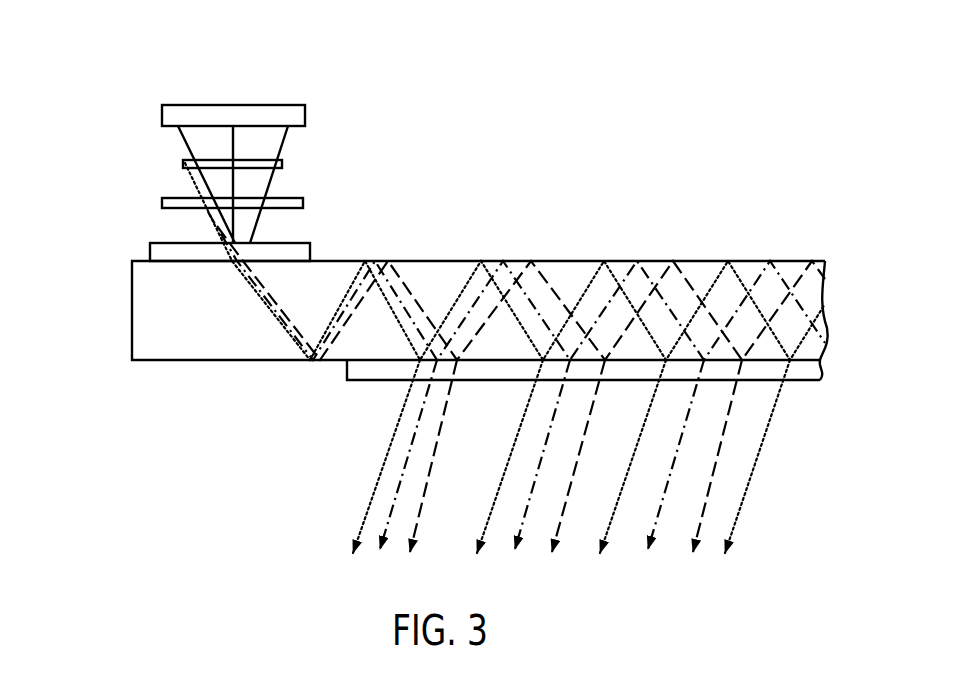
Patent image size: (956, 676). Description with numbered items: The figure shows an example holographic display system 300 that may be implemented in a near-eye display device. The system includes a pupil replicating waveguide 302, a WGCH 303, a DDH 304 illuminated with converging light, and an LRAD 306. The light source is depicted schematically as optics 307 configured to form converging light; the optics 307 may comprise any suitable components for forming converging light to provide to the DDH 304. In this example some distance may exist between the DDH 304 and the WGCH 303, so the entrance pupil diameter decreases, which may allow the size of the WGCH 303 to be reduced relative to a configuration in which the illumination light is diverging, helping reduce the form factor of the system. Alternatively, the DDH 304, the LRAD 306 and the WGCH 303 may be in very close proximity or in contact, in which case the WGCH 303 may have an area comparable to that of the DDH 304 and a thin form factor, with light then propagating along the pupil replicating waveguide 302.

The holographic display system 300 is at (764, 59).
The pupil replicating waveguide 302 is at (132, 306).
The WGCH 303 is at (310, 247).
The DDH 304 is at (282, 162).
The LRAD 306 is at (303, 200).
The optics 307 is at (305, 109).